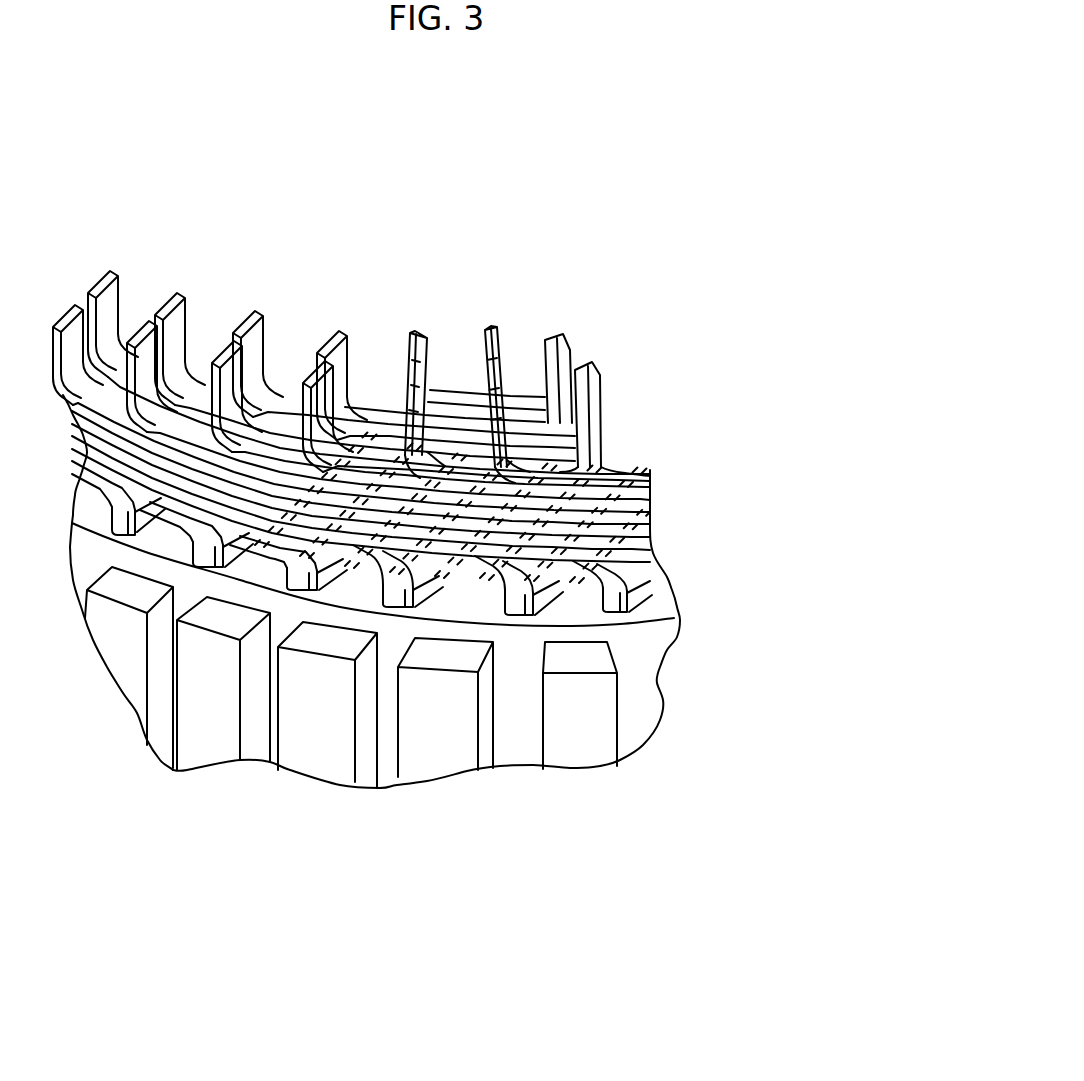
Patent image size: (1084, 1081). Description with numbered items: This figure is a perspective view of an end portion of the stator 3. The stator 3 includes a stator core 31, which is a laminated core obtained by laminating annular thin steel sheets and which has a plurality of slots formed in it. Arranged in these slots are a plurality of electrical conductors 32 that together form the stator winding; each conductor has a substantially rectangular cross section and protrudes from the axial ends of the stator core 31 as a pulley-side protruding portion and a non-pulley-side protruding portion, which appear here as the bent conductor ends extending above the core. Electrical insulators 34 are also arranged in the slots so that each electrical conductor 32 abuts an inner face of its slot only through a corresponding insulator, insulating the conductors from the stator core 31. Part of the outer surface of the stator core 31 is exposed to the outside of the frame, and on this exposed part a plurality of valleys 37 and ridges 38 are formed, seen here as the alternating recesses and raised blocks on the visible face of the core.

The stator 3 is at (500, 601).
The stator core 31 is at (408, 663).
The electrical conductors 32 is at (600, 467).
The electrical insulators 34 is at (613, 603).
The valleys 37 is at (392, 773).
The ridges 38 is at (443, 753).